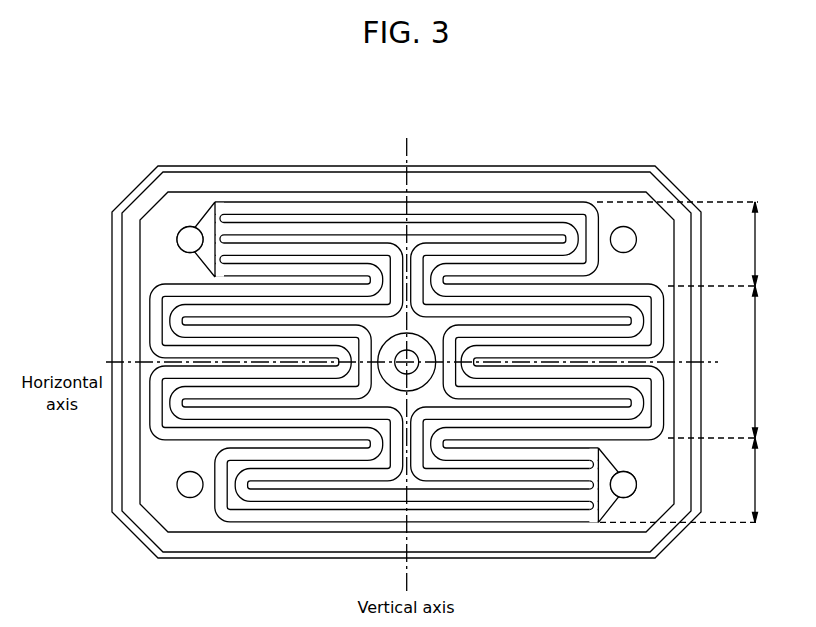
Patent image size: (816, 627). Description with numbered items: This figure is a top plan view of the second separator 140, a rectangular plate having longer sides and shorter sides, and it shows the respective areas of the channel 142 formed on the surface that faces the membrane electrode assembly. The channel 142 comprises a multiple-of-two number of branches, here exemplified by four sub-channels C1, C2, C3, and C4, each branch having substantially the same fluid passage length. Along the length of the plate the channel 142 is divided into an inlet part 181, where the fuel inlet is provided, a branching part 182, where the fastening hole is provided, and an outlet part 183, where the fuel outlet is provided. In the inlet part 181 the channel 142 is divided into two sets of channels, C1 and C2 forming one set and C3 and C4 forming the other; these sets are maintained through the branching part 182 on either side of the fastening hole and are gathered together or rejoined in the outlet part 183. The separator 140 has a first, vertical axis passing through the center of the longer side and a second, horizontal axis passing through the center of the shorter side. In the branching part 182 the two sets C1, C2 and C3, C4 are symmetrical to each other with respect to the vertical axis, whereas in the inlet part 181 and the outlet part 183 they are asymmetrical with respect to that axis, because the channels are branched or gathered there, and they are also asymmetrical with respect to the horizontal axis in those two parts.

The second separator 140 is at (393, 79).
The channel 142 is at (237, 118).
The channel (first sub-channel) C1 is at (235, 208).
The channel (second sub-channel) C2 is at (278, 228).
The channel (third sub-channel) C3 is at (308, 248).
The channel (fourth sub-channel) C4 is at (353, 272).
The inlet part 181 is at (688, 244).
The branching part 182 is at (724, 362).
The outlet part 183 is at (690, 480).